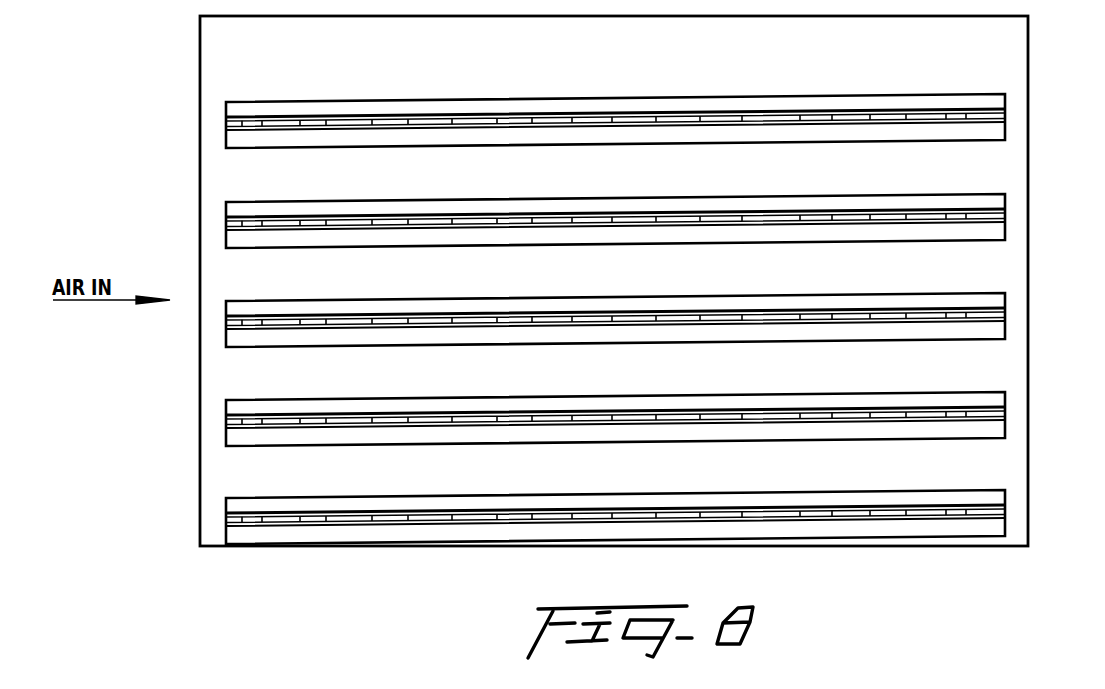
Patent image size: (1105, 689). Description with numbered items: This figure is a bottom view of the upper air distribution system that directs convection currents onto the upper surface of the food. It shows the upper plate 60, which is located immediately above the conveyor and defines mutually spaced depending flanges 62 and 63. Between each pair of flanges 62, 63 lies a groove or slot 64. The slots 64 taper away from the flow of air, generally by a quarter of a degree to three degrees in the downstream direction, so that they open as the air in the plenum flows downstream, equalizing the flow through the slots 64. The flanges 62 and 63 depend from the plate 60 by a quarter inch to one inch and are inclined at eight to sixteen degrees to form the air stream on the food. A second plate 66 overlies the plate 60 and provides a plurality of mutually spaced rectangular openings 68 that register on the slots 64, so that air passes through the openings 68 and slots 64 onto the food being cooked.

The upper plate 60 is at (657, 55).
The depending slot flange 62 is at (228, 130).
The depending slot flange 63 is at (228, 119).
The slot 64 is at (993, 318).
The second plate 66 is at (913, 117).
The rectangular opening 68 is at (868, 117).